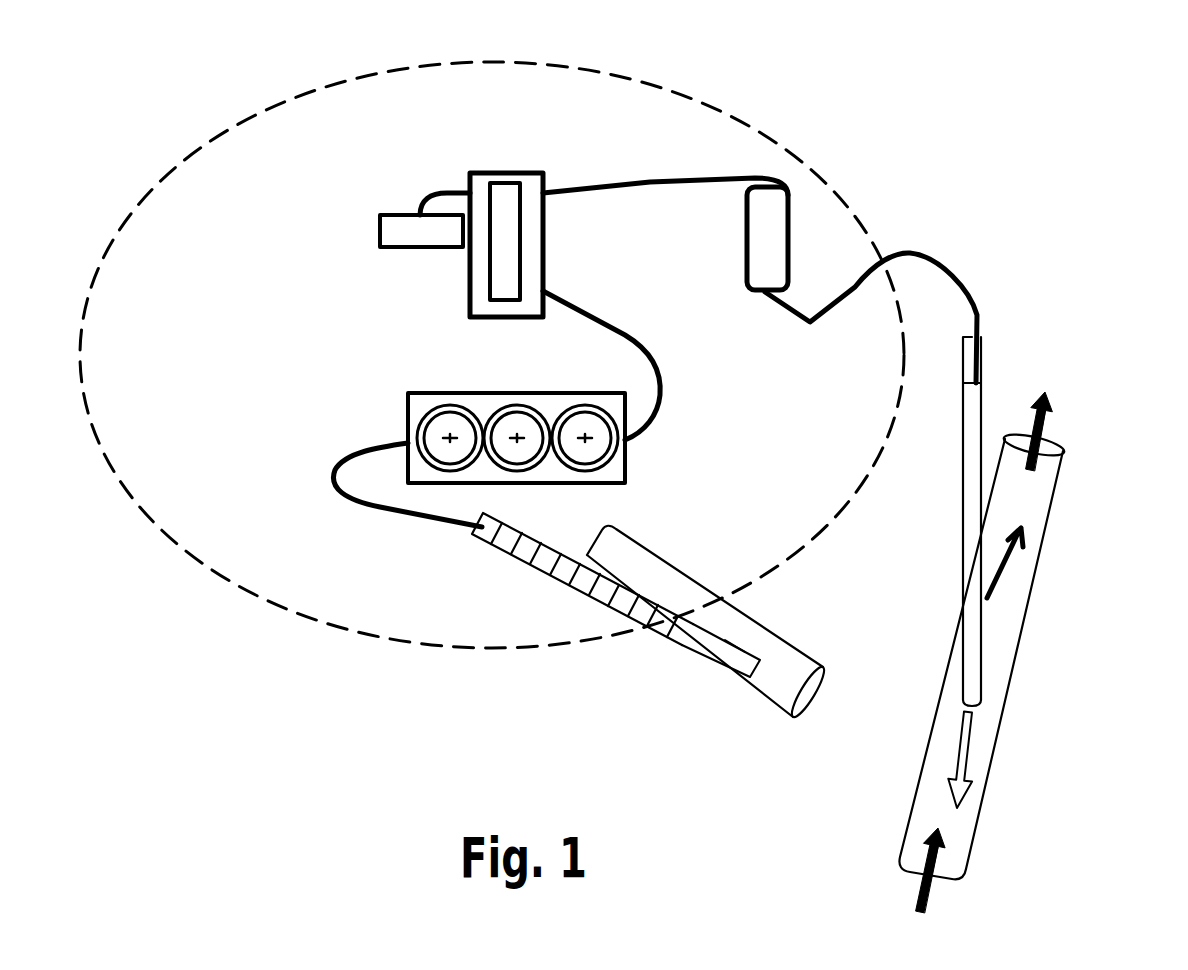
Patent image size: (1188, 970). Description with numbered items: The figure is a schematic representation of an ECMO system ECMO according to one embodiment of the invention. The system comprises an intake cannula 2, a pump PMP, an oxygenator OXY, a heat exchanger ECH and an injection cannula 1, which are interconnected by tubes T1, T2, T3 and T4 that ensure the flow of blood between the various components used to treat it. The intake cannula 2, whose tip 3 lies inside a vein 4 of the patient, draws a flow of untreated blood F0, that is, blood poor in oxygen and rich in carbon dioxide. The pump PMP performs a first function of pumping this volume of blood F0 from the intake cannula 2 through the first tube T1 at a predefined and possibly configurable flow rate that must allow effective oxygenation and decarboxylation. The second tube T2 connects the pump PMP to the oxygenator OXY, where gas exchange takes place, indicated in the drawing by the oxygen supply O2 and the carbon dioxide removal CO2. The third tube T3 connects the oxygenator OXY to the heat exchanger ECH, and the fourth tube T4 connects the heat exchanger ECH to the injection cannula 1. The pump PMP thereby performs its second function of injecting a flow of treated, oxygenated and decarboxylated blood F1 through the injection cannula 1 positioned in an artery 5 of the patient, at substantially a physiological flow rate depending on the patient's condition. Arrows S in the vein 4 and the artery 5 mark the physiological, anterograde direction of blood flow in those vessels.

The ECMO system ECMO is at (190, 560).
The oxygenator OXY is at (512, 173).
The oxygen inlet O2 is at (425, 245).
The carbon dioxide outlet CO2 is at (417, 306).
The third tube T3 is at (650, 180).
The heat exchanger ECH is at (753, 237).
The fourth tube T4 is at (904, 253).
The second tube T2 is at (592, 312).
The pump PMP is at (400, 396).
The first tube T1 is at (345, 497).
The intake cannula 2 is at (522, 540).
The catheter tip 3 is at (721, 645).
The vein 4 is at (760, 700).
The flow of untreated blood F0 is at (745, 650).
The injection cannula 1 is at (947, 472).
The flow of treated blood F1 is at (1012, 550).
The artery 5 is at (1013, 643).
The physiological direction of blood flow S is at (1043, 420).